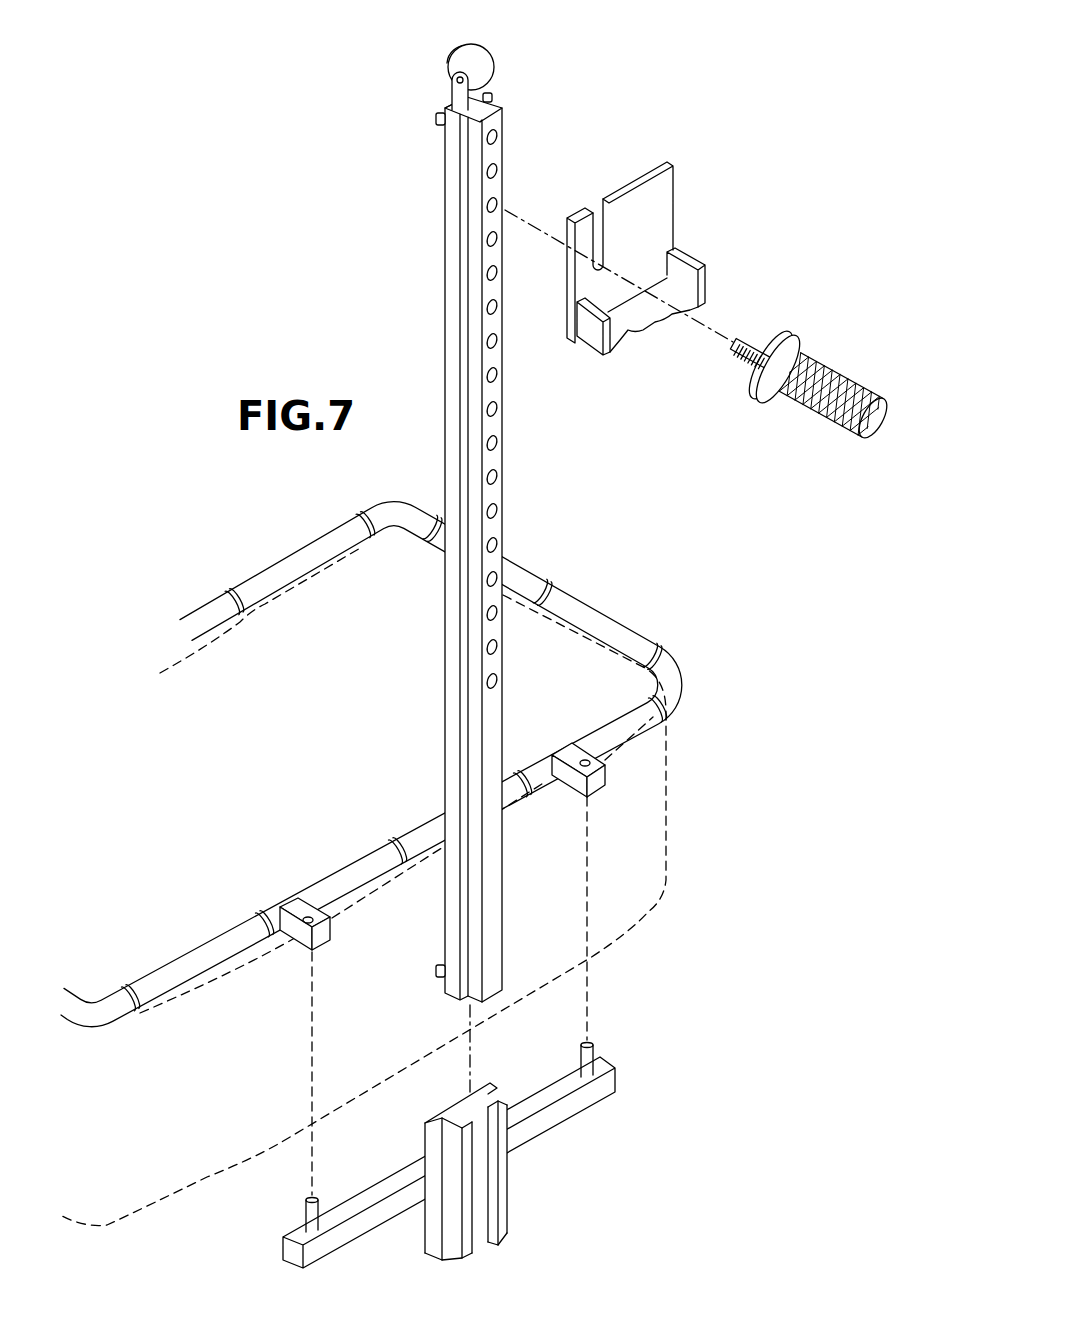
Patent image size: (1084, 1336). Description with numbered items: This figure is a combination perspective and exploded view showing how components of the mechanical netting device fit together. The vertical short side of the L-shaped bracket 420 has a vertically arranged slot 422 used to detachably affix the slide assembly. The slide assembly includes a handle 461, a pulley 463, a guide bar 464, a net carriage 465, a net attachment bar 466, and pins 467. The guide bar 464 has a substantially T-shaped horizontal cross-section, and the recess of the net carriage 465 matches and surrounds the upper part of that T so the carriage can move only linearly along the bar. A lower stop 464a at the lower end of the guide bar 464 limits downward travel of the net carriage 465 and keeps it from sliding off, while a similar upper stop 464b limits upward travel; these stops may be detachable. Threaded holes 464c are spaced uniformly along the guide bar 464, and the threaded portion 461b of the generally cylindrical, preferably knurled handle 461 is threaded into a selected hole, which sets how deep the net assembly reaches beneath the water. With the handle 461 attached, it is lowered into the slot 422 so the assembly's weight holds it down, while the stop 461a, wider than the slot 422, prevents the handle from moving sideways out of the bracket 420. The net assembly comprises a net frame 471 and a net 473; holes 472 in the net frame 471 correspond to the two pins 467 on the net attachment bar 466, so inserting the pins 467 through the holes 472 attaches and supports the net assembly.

The bracket 420 is at (693, 234).
The slot 422 is at (602, 230).
The handle 461 is at (847, 330).
The stop 461a is at (786, 345).
The threaded portion 461b is at (745, 333).
The pulley 463 is at (483, 68).
The guide bar 464 is at (483, 569).
The lower stop 464a is at (437, 967).
The upper stop 464b is at (437, 117).
The threaded holes 464c is at (497, 137).
The net carriage 465 is at (500, 1192).
The net attachment bar 466 is at (598, 1085).
The pins 467 is at (597, 1048).
The net frame 471 is at (215, 950).
The holes 472 is at (595, 762).
The net 473 is at (207, 1177).